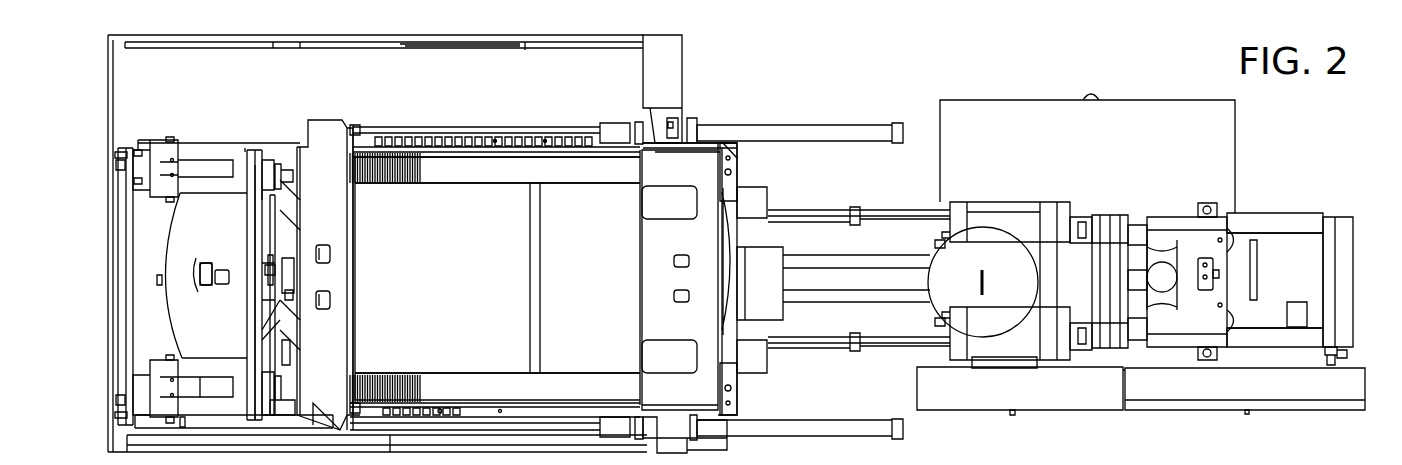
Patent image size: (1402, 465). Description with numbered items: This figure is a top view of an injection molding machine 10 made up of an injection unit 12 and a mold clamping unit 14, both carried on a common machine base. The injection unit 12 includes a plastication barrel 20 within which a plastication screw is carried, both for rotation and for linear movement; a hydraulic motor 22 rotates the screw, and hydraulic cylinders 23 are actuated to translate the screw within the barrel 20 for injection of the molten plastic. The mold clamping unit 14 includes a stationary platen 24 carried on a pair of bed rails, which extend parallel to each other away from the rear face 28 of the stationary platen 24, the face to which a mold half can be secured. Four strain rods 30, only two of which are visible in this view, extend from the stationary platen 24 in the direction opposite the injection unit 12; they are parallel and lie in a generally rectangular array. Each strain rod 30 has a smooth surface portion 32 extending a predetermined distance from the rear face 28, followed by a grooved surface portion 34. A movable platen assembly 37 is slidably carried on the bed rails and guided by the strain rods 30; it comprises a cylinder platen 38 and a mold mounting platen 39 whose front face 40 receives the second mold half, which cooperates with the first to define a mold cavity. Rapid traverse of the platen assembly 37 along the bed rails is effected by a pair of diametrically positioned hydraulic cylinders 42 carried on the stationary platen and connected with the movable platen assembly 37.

The injection molding machine 10 is at (805, 70).
The injection unit 12 is at (1138, 152).
The mold clamping unit 14 is at (251, 89).
The plastication barrel 20 is at (845, 295).
The hydraulic motor 22 is at (1160, 245).
The hydraulic cylinders 23 is at (1030, 208).
The stationary platen 24 is at (700, 150).
The rear face 28 is at (655, 250).
The strain rods 30 is at (505, 188).
The smooth surface portion 32 is at (512, 162).
The grooved surface portion 34 is at (388, 150).
The movable platen assembly 37 is at (226, 162).
The cylinder platen 38 is at (222, 339).
The mold mounting platen 39 is at (308, 152).
The front face 40 is at (350, 266).
The hydraulic cylinders 42 is at (795, 128).